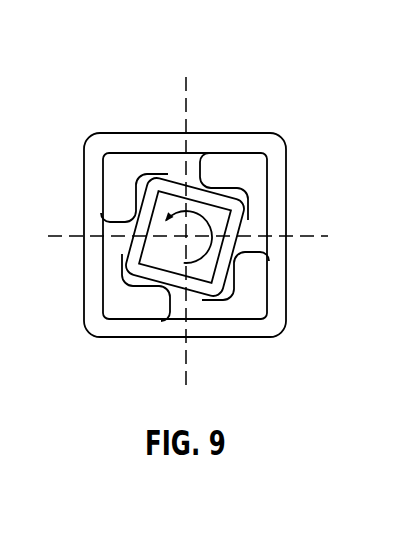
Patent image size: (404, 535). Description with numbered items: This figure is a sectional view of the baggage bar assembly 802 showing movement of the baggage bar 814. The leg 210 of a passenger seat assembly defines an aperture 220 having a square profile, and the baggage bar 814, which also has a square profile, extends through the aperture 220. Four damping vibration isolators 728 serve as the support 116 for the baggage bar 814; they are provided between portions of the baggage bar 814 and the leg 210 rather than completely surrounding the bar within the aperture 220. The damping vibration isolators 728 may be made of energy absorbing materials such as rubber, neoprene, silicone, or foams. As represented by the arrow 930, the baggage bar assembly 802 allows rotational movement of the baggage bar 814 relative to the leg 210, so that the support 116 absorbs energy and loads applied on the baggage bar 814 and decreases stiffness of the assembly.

The baggage bar assembly 802 is at (258, 92).
The aperture 220 is at (102, 197).
The leg 210 is at (271, 152).
The damping vibration isolators 728 is at (123, 173).
The support 116 is at (232, 167).
The baggage bar 814 is at (233, 277).
The arrow 930 is at (170, 210).